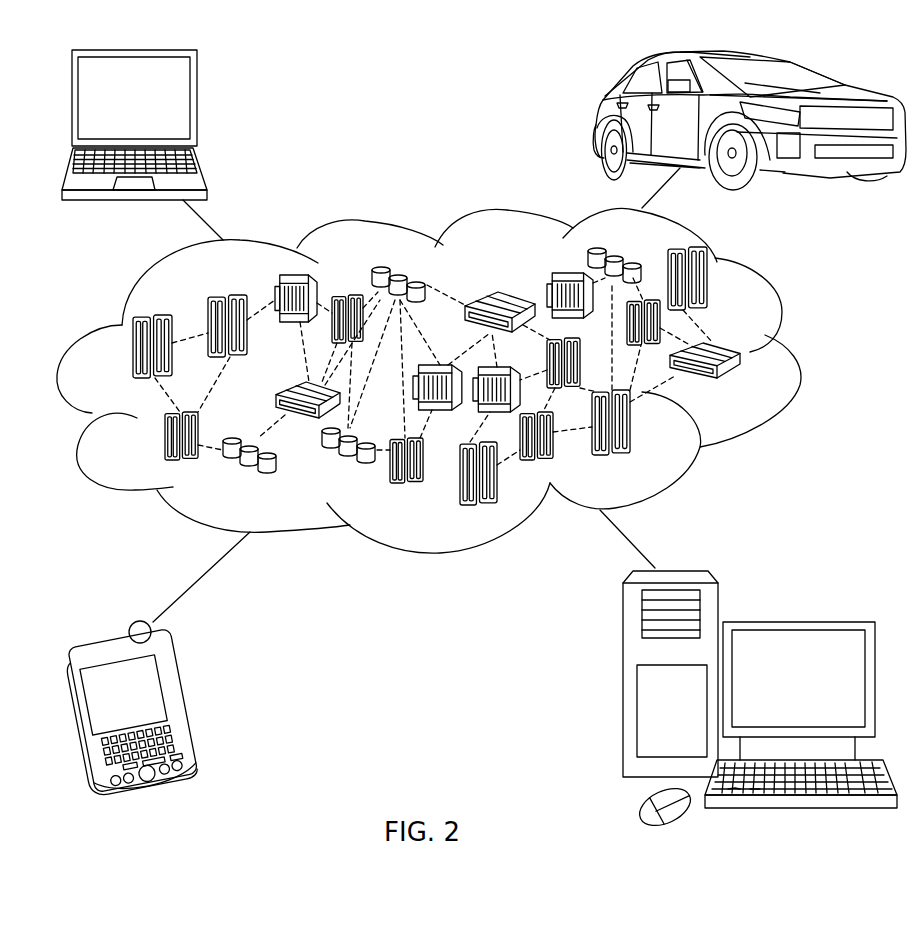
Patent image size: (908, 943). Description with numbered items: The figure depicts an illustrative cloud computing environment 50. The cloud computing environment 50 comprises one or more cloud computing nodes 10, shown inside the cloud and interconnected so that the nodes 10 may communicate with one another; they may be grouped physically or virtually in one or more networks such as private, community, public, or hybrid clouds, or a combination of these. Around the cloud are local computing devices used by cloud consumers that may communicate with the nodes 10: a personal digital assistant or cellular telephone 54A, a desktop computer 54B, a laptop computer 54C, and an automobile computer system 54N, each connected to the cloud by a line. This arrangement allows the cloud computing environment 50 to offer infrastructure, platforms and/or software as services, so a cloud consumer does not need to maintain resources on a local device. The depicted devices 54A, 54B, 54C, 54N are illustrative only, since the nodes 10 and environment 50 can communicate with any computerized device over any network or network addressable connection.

The cloud computing nodes 10 is at (743, 383).
The cloud computing environment 50 is at (797, 357).
The personal digital assistant (PDA) or cellular telephone 54A is at (188, 706).
The desktop computer 54B is at (797, 621).
The laptop computer 54C is at (197, 108).
The automobile computer system 54N is at (597, 118).